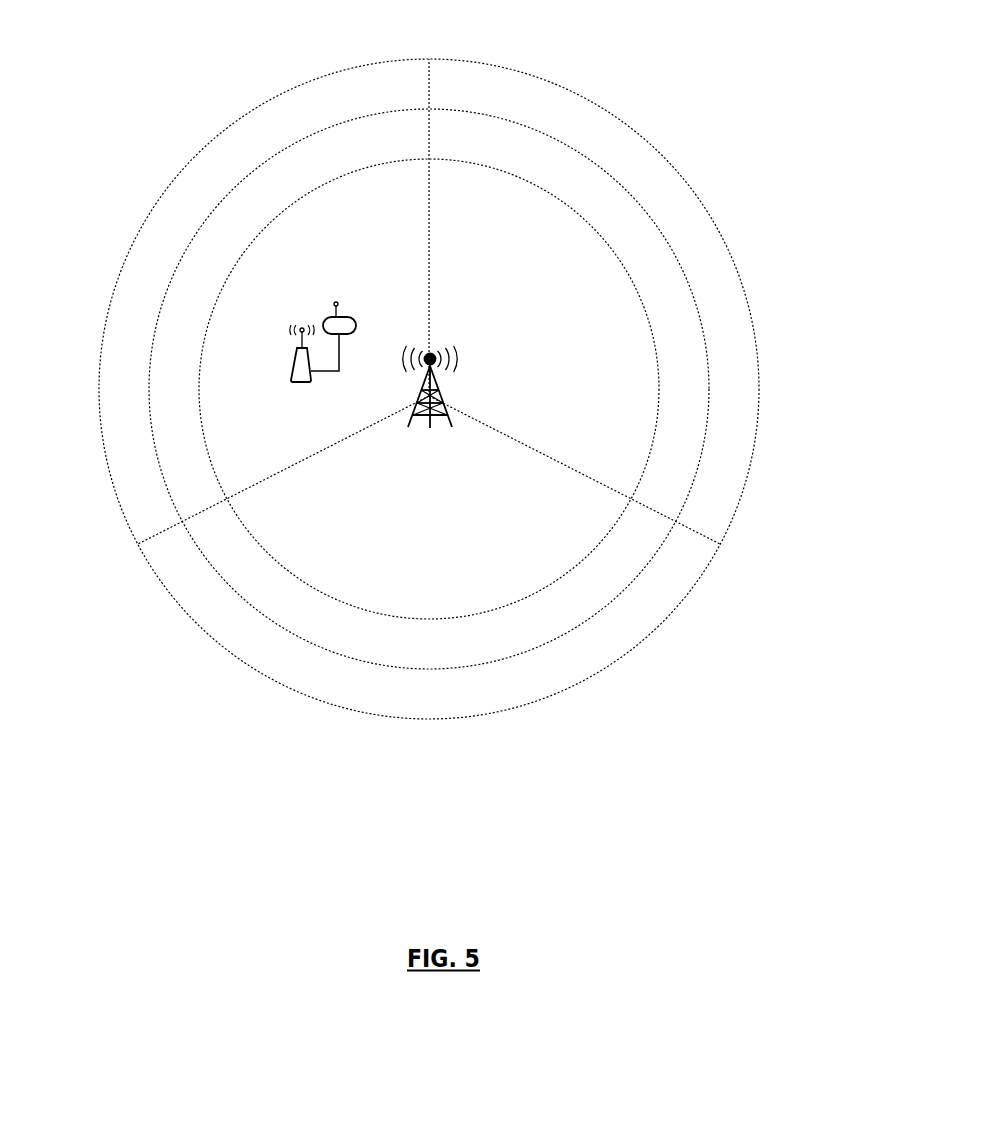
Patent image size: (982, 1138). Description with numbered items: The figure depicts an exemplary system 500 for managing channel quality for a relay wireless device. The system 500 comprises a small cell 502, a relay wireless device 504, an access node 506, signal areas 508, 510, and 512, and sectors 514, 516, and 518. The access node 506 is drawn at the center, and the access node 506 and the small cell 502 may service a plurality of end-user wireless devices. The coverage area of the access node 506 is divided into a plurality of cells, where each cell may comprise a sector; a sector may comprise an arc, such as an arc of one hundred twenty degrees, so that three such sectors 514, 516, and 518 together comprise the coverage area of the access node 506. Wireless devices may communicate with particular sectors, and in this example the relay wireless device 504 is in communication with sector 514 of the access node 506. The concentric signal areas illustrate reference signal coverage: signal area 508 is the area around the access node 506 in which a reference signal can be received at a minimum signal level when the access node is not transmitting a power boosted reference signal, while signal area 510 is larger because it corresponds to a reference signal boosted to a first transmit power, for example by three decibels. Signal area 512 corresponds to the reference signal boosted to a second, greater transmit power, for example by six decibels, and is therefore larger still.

The system 500 is at (723, 101).
The small cell 502 is at (298, 349).
The relay wireless device 504 is at (353, 317).
The access node 506 is at (430, 427).
The signal area 508 is at (457, 161).
The signal area 510 is at (457, 110).
The signal area 512 is at (457, 59).
The sector 514 is at (148, 212).
The sector 516 is at (623, 119).
The sector 518 is at (628, 654).